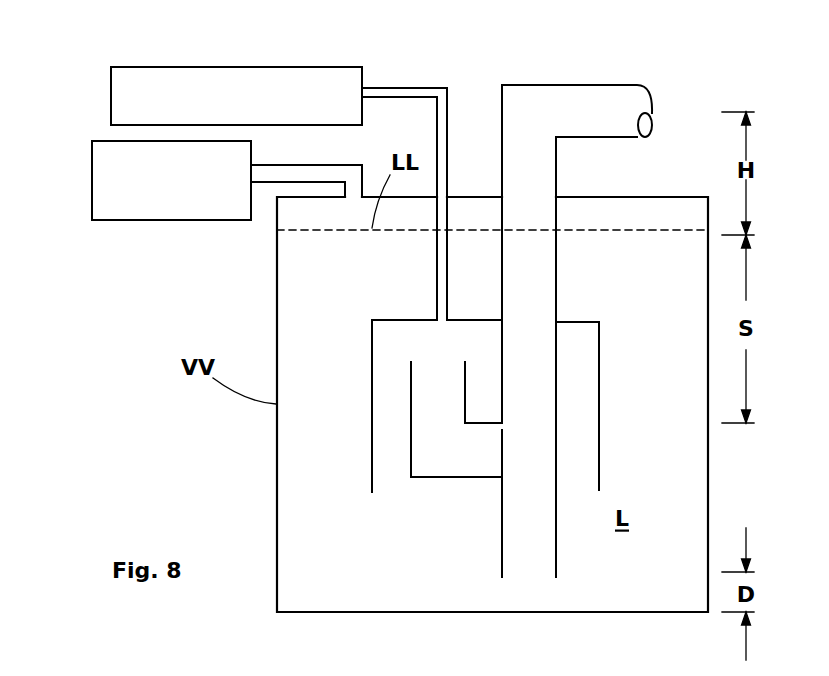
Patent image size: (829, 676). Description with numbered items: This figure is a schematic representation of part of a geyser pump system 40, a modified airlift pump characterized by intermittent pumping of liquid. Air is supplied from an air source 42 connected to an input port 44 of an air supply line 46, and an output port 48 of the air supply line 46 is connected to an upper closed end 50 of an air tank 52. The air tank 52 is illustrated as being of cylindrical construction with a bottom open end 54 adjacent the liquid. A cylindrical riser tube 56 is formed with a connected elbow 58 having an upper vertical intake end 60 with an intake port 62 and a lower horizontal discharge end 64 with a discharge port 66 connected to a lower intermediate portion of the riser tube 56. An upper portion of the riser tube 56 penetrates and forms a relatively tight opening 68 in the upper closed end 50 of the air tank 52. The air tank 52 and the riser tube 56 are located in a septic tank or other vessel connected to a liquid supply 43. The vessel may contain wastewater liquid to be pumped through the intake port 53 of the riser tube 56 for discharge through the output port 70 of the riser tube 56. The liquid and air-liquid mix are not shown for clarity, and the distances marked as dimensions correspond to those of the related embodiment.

The geyser pump system 40 is at (580, 67).
The air source 42 is at (111, 97).
The liquid supply 43 is at (168, 222).
The input port 44 is at (362, 88).
The air supply line 46 is at (447, 157).
The output port 48 is at (440, 328).
The upper closed end 50 is at (458, 320).
The air tank 52 is at (604, 403).
The intake port 53 is at (528, 572).
The bottom open end 54 is at (397, 482).
The riser tube 56 is at (559, 267).
The elbow 58 is at (457, 484).
The upper vertical intake end 60 is at (472, 363).
The intake port 62 is at (440, 375).
The lower horizontal discharge end 64 is at (483, 423).
The discharge port 66 is at (503, 447).
The opening 68 is at (557, 318).
The output port 70 is at (655, 108).